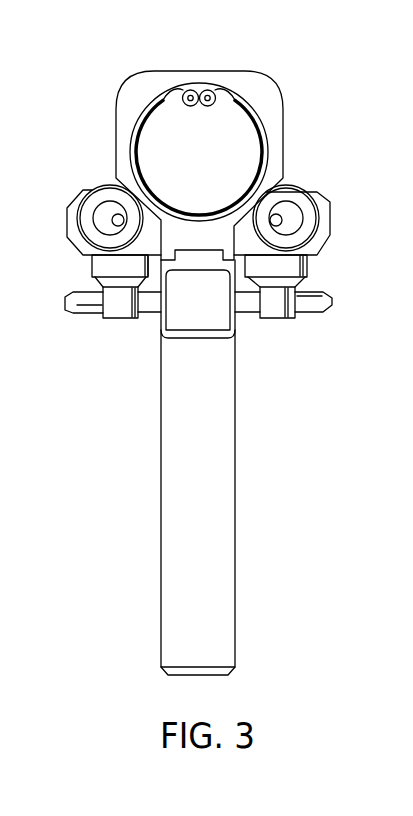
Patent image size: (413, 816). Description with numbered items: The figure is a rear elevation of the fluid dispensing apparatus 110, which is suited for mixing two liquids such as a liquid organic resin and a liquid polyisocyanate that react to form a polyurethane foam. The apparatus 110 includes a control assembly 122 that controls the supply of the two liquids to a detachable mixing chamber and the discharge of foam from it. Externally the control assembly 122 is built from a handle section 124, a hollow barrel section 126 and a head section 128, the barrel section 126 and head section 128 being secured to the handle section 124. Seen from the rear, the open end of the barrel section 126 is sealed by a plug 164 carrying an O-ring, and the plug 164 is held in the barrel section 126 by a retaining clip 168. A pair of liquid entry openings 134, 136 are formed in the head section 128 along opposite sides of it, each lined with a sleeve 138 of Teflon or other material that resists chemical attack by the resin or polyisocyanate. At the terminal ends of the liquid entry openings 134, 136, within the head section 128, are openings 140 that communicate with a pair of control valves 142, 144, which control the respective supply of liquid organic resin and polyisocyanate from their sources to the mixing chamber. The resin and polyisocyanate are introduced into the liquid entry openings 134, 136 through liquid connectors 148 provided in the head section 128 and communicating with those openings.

The dispensing apparatus 110 is at (301, 52).
The control assembly 122 is at (238, 321).
The handle section 124 is at (223, 448).
The barrel section 126 is at (263, 105).
The head section 128 is at (327, 228).
The liquid entry opening 134 is at (107, 208).
The liquid entry opening 136 is at (296, 209).
The sleeve 138 is at (305, 215).
The openings 140 is at (280, 224).
The control valve 142 is at (115, 313).
The control valve 144 is at (279, 308).
The liquid connectors 148 is at (288, 187).
The plug 164 is at (215, 118).
The retaining clip 168 is at (167, 95).